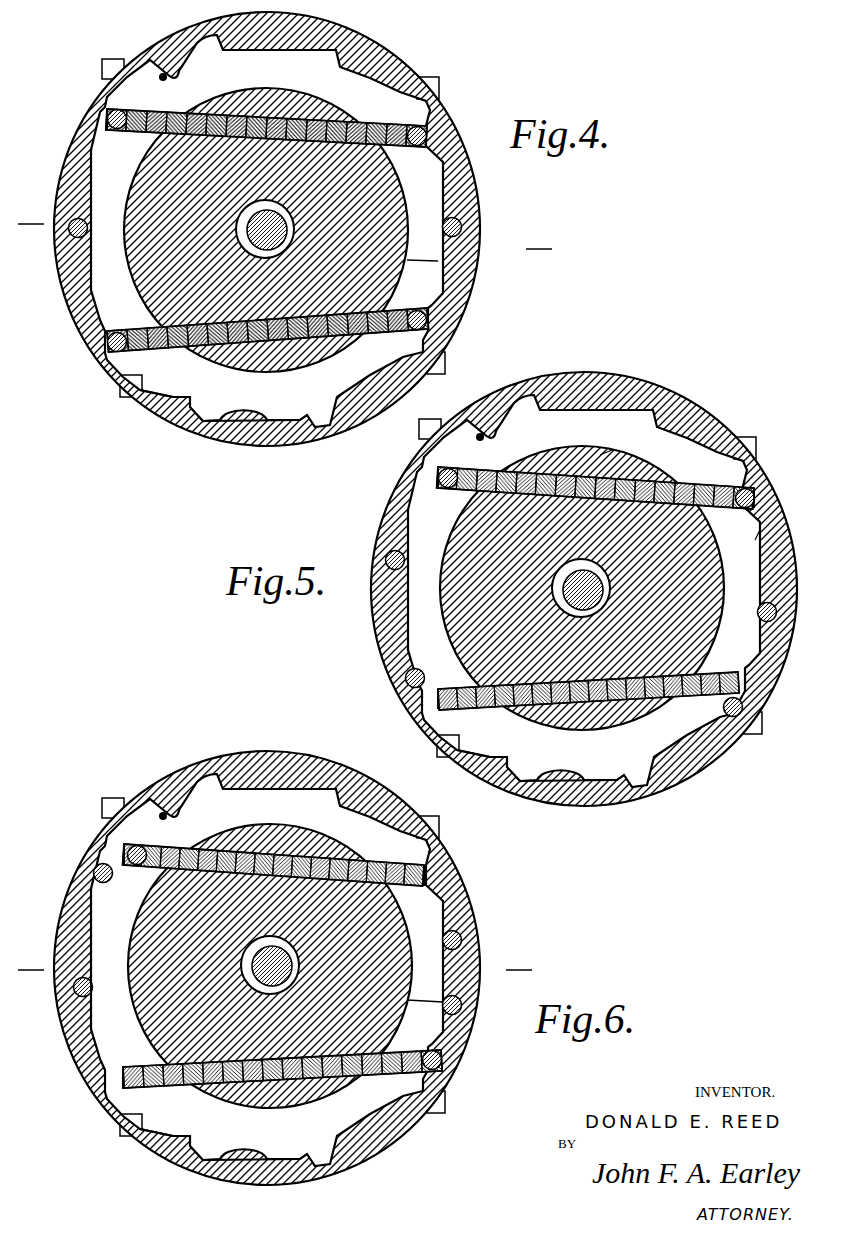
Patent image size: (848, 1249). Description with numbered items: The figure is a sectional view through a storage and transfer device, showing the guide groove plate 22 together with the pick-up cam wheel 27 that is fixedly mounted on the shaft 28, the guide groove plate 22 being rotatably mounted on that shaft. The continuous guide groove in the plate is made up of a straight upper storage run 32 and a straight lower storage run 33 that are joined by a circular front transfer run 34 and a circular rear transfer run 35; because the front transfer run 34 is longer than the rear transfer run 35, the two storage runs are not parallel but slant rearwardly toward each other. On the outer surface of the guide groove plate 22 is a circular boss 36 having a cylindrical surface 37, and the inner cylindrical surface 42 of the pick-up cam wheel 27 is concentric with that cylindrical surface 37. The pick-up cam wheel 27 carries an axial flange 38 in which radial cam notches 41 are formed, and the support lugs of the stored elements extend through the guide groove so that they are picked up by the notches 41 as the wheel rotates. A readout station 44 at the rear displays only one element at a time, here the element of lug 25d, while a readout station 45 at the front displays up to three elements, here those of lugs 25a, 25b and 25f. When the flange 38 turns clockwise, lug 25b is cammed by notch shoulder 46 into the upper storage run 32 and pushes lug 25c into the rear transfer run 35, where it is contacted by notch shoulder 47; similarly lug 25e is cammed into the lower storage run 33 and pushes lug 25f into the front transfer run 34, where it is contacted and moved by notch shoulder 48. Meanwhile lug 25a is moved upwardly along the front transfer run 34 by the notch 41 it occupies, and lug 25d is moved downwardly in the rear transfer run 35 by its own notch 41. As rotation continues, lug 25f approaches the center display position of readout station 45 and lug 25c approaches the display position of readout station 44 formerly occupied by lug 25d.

In FIG. 4, the guide groove plate 22 is at (386, 279).
In FIG. 5, the guide groove plate 22 is at (690, 643).
In FIG. 6, the guide groove plate 22 is at (403, 927).
In FIG. 4, the support lug 25a is at (74, 240).
In FIG. 5, the support lug 25a is at (393, 556).
In FIG. 6, the support lug 25a is at (98, 868).
In FIG. 4, the support lug 25b is at (113, 110).
In FIG. 5, the support lug 25b is at (436, 478).
In FIG. 6, the support lug 25b is at (133, 848).
In FIG. 4, the support lug 25c is at (430, 108).
In FIG. 5, the support lug 25c is at (758, 494).
In FIG. 6, the support lug 25c is at (460, 940).
In FIG. 4, the support lug 25d is at (461, 227).
In FIG. 5, the support lug 25d is at (772, 622).
In FIG. 6, the support lug 25d is at (455, 1013).
In FIG. 4, the support lug 25e is at (432, 322).
In FIG. 5, the support lug 25e is at (746, 728).
In FIG. 6, the support lug 25e is at (435, 1070).
In FIG. 4, the support lug 25f is at (103, 352).
In FIG. 5, the support lug 25f is at (408, 680).
In FIG. 6, the support lug 25f is at (85, 996).
In FIG. 4, the pick-up cam wheel 27 is at (230, 443).
In FIG. 5, the pick-up cam wheel 27 is at (670, 777).
In FIG. 6, the pick-up cam wheel 27 is at (168, 1145).
In FIG. 5, the shaft 28 is at (760, 530).
In FIG. 4, the upper storage run 32 is at (343, 124).
In FIG. 5, the upper storage run 32 is at (673, 484).
In FIG. 6, the upper storage run 32 is at (163, 847).
In FIG. 4, the lower storage run 33 is at (297, 341).
In FIG. 5, the lower storage run 33 is at (617, 700).
In FIG. 6, the lower storage run 33 is at (178, 1092).
In FIG. 4, the front transfer run 34 is at (77, 165).
In FIG. 5, the front transfer run 34 is at (388, 614).
In FIG. 6, the front transfer run 34 is at (77, 917).
In FIG. 4, the rear transfer run 35 is at (441, 186).
In FIG. 5, the rear transfer run 35 is at (612, 588).
In FIG. 6, the rear transfer run 35 is at (450, 990).
In FIG. 5, the circular boss 36 is at (605, 460).
In FIG. 4, the cylindrical surface 37 is at (438, 261).
In FIG. 6, the cylindrical surface 37 is at (443, 1002).
In FIG. 4, the axial flange 38 is at (366, 39).
In FIG. 5, the axial flange 38 is at (700, 420).
In FIG. 6, the axial flange 38 is at (240, 762).
In FIG. 4, the radial cam notch 41 is at (214, 44).
In FIG. 5, the radial cam notch 41 is at (592, 803).
In FIG. 6, the radial cam notch 41 is at (387, 833).
In FIG. 4, the inner cylindrical surface 42 is at (160, 60).
In FIG. 5, the inner cylindrical surface 42 is at (578, 402).
In FIG. 6, the inner cylindrical surface 42 is at (213, 787).
In FIG. 4, the readout station 44 is at (541, 236).
In FIG. 6, the readout station 44 is at (521, 957).
In FIG. 4, the readout station 45 is at (33, 211).
In FIG. 6, the readout station 45 is at (33, 957).
In FIG. 4, the notch shoulder 46 is at (105, 113).
In FIG. 5, the notch shoulder 46 is at (438, 467).
In FIG. 6, the notch shoulder 46 is at (190, 783).
In FIG. 5, the notch shoulder 47 is at (744, 486).
In FIG. 6, the notch shoulder 47 is at (430, 878).
In FIG. 5, the notch shoulder 48 is at (420, 701).
In FIG. 6, the notch shoulder 48 is at (120, 1078).